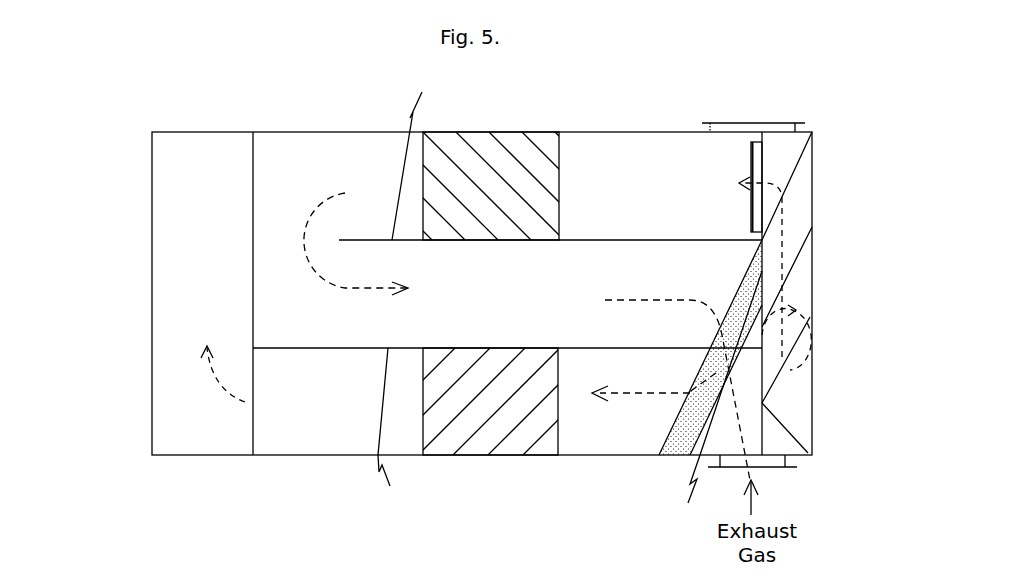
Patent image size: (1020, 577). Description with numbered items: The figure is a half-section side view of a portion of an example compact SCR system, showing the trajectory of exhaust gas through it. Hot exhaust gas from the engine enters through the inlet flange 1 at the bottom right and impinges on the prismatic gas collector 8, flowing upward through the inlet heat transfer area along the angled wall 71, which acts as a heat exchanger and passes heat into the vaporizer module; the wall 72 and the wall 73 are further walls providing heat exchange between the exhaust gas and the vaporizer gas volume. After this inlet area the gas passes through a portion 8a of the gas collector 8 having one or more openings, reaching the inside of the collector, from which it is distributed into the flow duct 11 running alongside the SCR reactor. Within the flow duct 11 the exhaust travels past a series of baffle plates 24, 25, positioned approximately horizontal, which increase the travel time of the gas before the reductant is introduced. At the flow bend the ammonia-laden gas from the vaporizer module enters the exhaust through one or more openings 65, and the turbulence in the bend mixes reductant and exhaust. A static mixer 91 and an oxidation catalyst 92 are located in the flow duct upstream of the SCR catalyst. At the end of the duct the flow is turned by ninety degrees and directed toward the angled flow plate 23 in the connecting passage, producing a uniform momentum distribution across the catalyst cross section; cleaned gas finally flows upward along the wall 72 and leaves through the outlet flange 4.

The inlet flange 1 is at (775, 467).
The outlet flange 4 is at (787, 123).
The gas collector 8 is at (775, 385).
The portion of the gas collector 8a is at (805, 318).
The flow duct 11 is at (585, 170).
The angled flow plate 23 is at (172, 314).
The baffle plate 24 is at (419, 156).
The baffle plate 25 is at (391, 431).
The openings 65 is at (714, 399).
The angled wall 71 is at (795, 263).
The wall 72 is at (746, 272).
The wall 73 is at (718, 420).
The static mixer 91 is at (482, 435).
The oxidation catalyst 92 is at (480, 163).